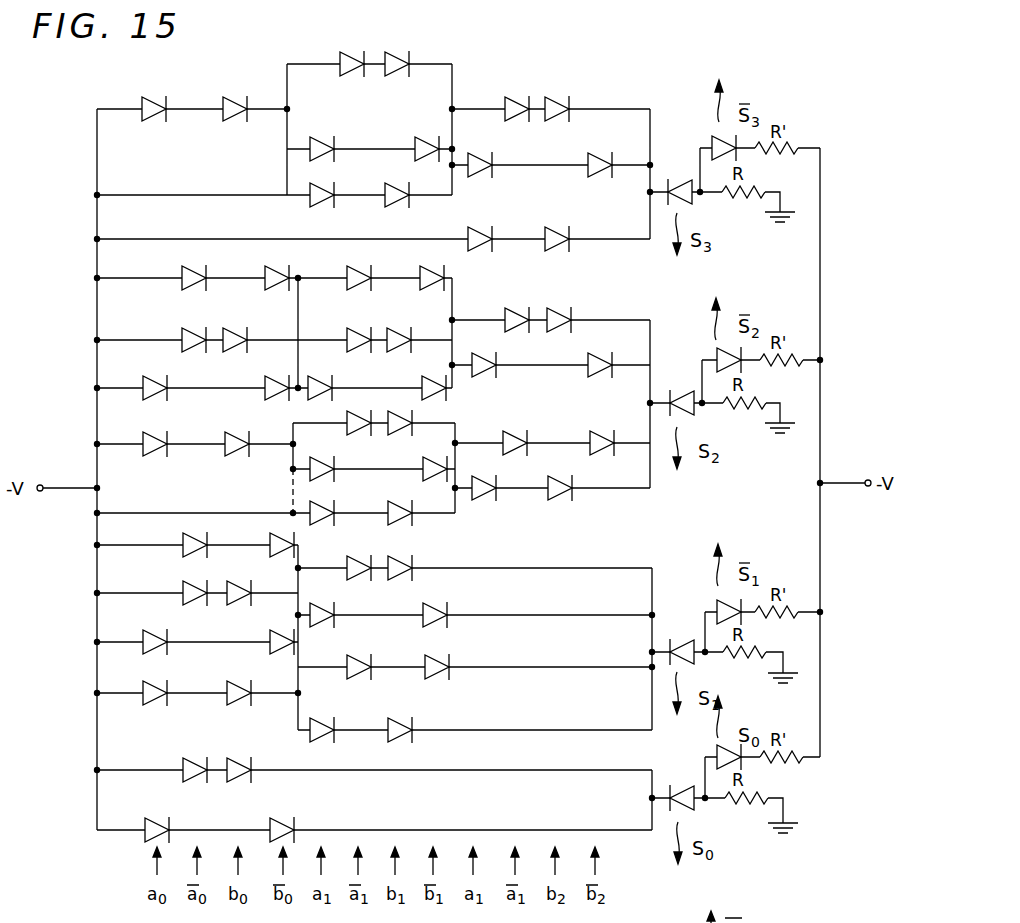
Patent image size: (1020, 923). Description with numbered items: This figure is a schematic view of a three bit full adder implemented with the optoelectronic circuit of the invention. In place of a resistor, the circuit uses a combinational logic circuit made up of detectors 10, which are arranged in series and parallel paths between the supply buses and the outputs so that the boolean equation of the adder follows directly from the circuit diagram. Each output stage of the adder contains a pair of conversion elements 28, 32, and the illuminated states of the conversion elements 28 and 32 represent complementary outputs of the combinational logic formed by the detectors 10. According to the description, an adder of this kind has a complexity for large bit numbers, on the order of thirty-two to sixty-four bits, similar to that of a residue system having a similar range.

The detectors 10 is at (222, 100).
The conversion element 28 is at (676, 180).
The conversion element 32 is at (714, 138).